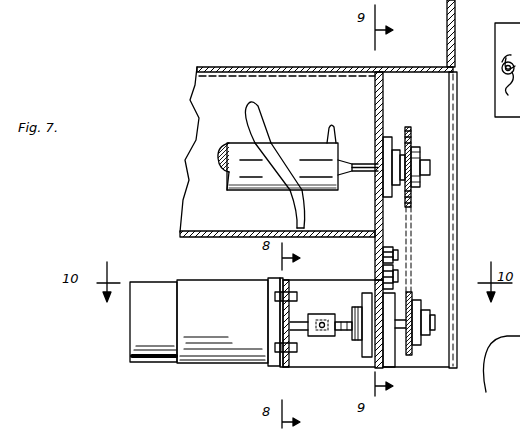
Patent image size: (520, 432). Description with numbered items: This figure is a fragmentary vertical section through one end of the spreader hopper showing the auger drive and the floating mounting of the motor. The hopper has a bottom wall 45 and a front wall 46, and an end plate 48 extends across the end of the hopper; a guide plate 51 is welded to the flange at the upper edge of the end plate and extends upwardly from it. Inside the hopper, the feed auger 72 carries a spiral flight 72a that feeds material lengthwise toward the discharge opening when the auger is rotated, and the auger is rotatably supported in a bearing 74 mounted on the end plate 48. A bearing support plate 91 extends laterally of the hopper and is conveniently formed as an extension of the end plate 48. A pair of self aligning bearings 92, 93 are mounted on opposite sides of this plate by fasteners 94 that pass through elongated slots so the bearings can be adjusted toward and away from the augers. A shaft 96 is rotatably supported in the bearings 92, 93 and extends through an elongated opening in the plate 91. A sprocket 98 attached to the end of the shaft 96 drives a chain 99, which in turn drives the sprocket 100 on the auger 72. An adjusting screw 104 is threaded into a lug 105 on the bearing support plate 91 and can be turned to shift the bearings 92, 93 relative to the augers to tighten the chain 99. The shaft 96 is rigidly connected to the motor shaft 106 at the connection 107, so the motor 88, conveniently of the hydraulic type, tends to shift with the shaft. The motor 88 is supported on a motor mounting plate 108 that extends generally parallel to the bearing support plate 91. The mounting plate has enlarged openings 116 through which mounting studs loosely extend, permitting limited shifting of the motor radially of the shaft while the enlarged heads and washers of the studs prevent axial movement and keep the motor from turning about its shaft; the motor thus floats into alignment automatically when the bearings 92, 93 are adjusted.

The bottom wall 45 is at (204, 230).
The front wall 46 is at (305, 75).
The end plate 48 is at (383, 98).
The guide plate 51 is at (456, 14).
The feed auger 72 is at (240, 142).
The spiral flight 72a is at (270, 122).
The bearing 74 is at (380, 113).
The motor 88 is at (207, 292).
The bearing support plate 91 is at (372, 266).
The self aligning bearing 92 is at (367, 357).
The self aligning bearing 93 is at (392, 362).
The fastener 94 is at (345, 331).
The shaft 96 is at (432, 322).
The sprocket 98 is at (413, 300).
The chain 99 is at (413, 216).
The sprocket 100 is at (420, 158).
The adjusting screw 104 is at (395, 273).
The lug 105 is at (395, 253).
The motor shaft 106 is at (305, 314).
The connection 107 is at (288, 366).
The motor mounting plate 108 is at (283, 322).
The enlarged opening 116 is at (290, 290).